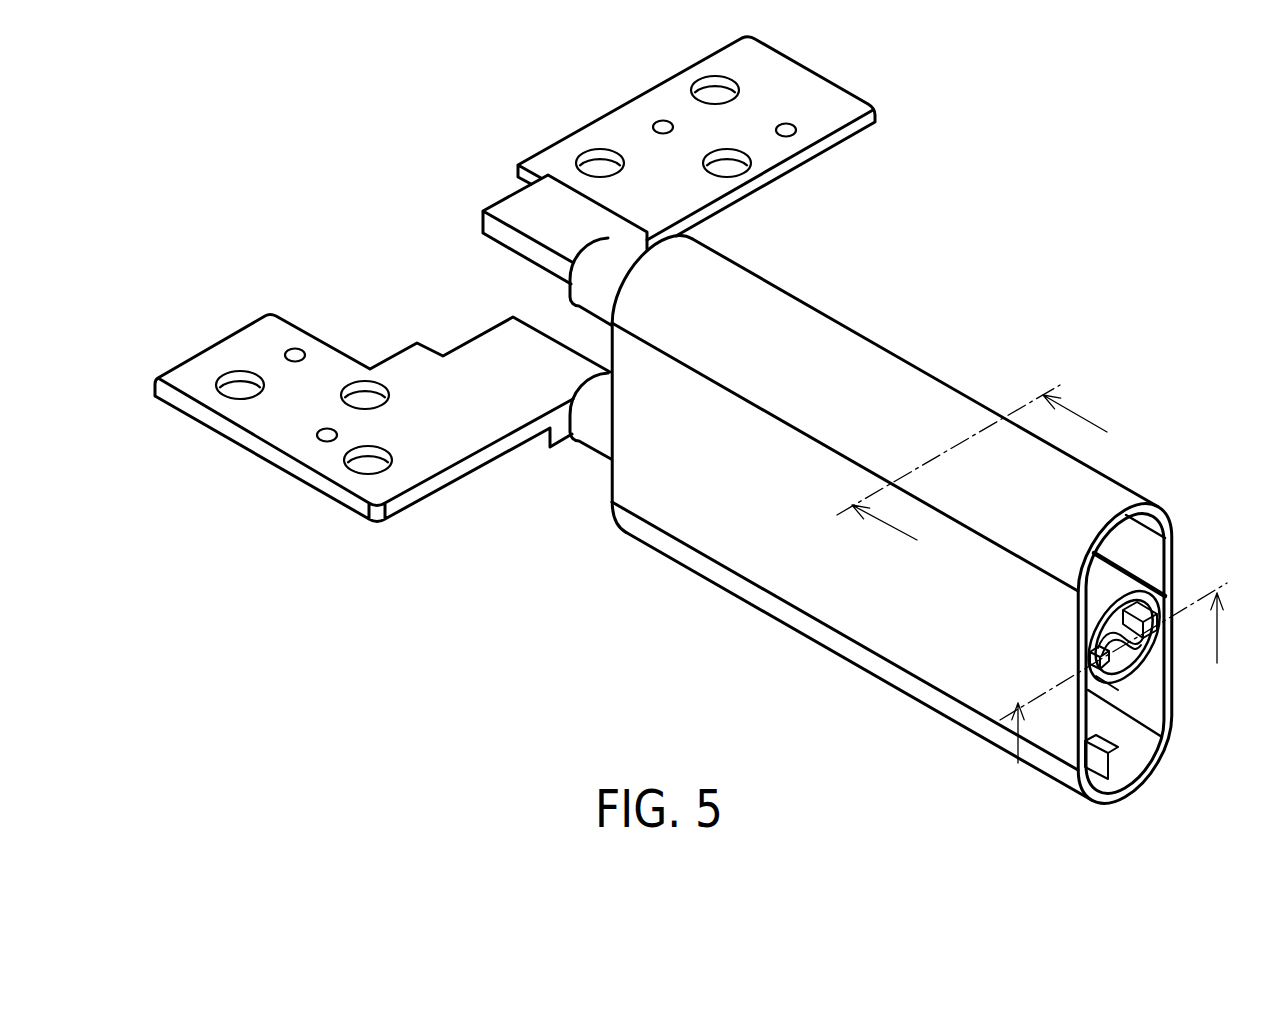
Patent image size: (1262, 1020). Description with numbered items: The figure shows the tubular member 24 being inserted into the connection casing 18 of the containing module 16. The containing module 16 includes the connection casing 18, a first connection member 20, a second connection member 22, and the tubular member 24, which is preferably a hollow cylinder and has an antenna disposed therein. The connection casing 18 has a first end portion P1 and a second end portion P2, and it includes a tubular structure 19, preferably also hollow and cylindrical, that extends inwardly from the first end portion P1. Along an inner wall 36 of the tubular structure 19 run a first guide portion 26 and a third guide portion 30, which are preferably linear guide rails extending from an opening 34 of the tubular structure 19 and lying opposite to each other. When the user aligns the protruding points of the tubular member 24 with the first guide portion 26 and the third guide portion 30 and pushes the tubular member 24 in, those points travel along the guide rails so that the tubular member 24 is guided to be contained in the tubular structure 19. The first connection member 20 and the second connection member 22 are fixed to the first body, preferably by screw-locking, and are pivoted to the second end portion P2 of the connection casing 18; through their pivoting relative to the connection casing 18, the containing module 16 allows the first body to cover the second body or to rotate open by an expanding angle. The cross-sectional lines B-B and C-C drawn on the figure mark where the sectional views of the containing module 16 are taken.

The containing module 16 is at (1077, 171).
The connection casing 18 is at (773, 323).
The tubular structure 19 is at (1123, 593).
The first connection member 20 is at (554, 157).
The second connection member 22 is at (243, 335).
The tubular member 24 is at (1140, 607).
The first guide portion 26 is at (1090, 665).
The third guide portion 30 is at (1160, 631).
The opening 34 is at (1108, 685).
The inner wall 36 is at (1133, 668).
The first end portion P1 is at (1164, 517).
The second end portion P2 is at (704, 252).